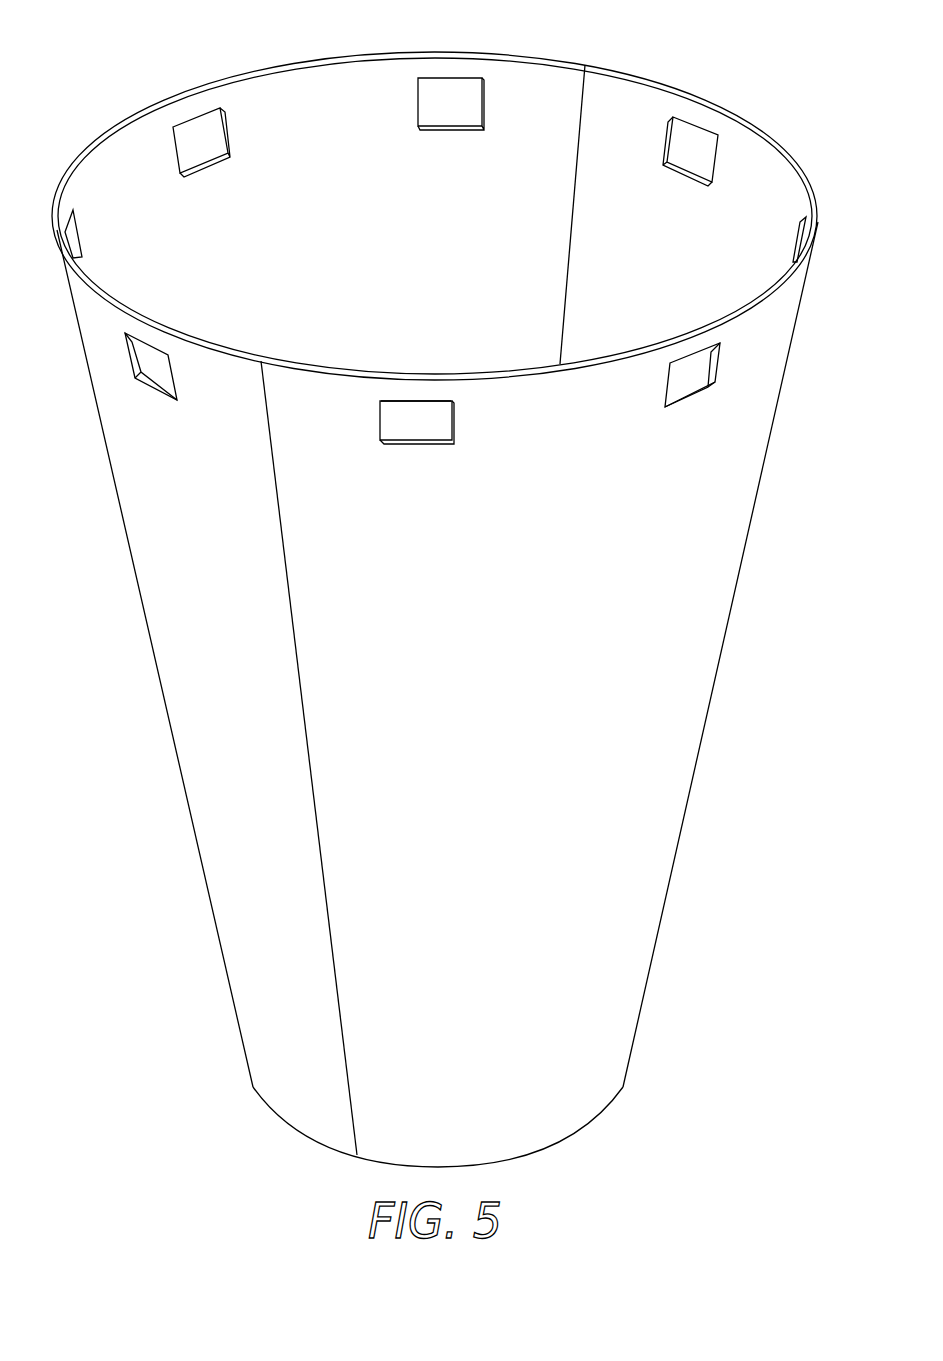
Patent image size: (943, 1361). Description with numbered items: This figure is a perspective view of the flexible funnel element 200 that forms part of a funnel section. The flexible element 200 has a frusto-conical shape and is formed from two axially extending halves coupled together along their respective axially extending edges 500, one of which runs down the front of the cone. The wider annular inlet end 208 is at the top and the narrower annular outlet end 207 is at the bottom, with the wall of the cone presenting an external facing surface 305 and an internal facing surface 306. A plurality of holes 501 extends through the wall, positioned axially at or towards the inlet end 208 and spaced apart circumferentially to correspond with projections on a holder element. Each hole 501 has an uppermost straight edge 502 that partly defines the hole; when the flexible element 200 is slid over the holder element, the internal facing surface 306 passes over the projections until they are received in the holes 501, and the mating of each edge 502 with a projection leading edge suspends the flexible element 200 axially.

The flexible funnel element 200 is at (144, 773).
The annular outlet end 207 is at (558, 1143).
The annular inlet end 208 is at (640, 78).
The external facing surface 305 is at (527, 666).
The internal facing surface 306 is at (398, 258).
The axially extending edges 500 is at (312, 758).
The holes 501 is at (433, 449).
The uppermost straight edge 502 is at (412, 402).